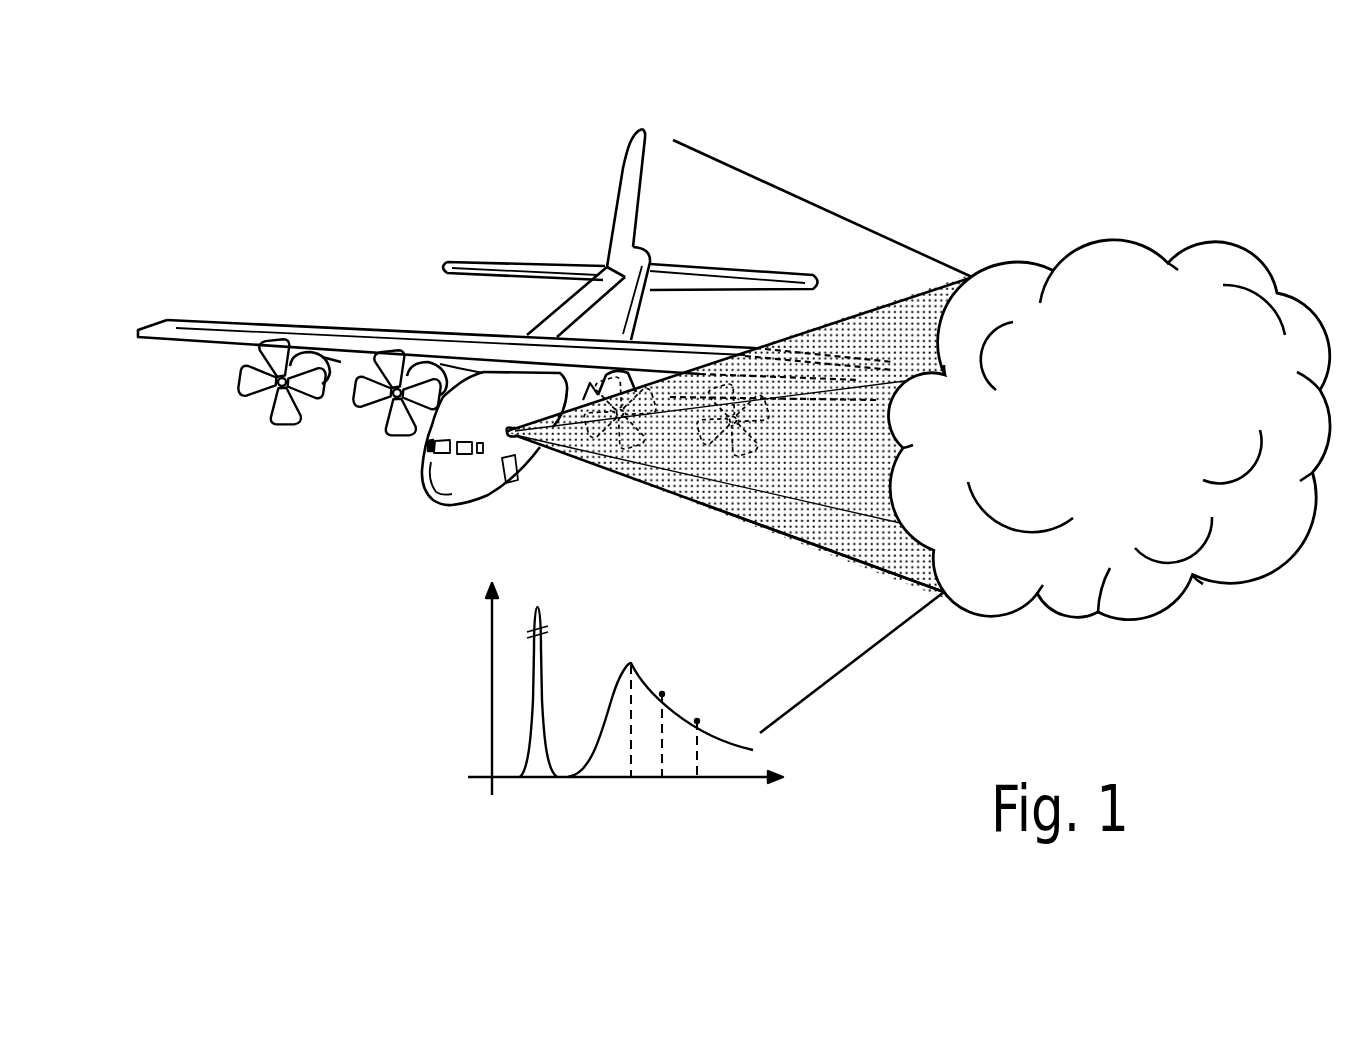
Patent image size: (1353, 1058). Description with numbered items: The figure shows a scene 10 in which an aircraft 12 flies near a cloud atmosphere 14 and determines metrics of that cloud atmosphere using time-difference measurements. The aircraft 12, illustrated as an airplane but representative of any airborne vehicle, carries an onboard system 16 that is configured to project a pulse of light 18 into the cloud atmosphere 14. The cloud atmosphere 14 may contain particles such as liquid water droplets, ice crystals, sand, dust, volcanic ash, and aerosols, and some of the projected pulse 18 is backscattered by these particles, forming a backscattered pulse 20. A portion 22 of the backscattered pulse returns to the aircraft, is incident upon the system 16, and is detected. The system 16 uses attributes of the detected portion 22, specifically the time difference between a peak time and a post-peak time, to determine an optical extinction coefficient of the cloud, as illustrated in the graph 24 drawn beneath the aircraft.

The scene 10 is at (396, 161).
The aircraft 12 is at (478, 317).
The cloud atmosphere 14 is at (1110, 430).
The system 16 is at (505, 433).
The pulse of light 18 is at (747, 490).
The backscattered pulse 20 is at (890, 640).
The portion of backscattered pulse 22 is at (813, 545).
The graph 24 is at (549, 797).